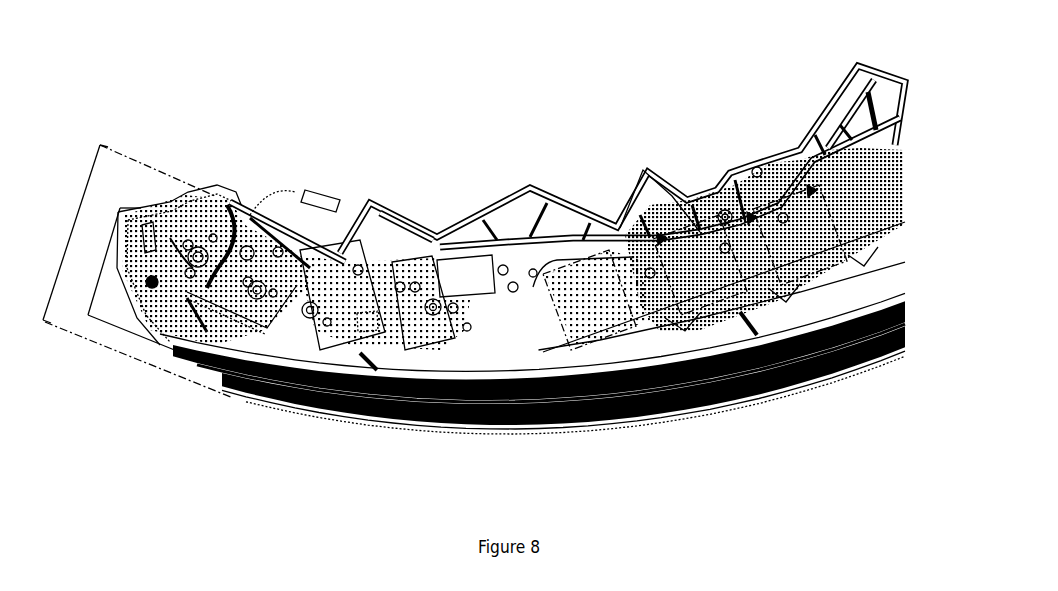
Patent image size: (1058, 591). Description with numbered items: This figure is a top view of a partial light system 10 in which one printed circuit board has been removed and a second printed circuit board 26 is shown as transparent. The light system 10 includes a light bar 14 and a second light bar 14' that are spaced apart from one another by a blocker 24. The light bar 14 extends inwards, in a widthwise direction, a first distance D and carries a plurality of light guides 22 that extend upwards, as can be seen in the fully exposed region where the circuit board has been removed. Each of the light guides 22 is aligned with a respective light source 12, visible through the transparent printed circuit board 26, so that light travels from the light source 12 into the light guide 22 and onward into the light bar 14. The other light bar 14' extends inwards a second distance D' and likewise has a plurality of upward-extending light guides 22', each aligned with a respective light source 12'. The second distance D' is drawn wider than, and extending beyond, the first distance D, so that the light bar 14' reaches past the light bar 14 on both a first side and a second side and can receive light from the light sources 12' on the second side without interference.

The light system 10 is at (417, 78).
The light source 12 is at (747, 329).
The light source 12' is at (659, 170).
The light bar 14 is at (532, 408).
The light bar 14' is at (563, 437).
The light guide 22 is at (327, 312).
The light guide 22' is at (531, 159).
The blocker 24 is at (487, 420).
The printed circuit board 26 is at (600, 320).
The first distance D is at (119, 279).
The second distance D' is at (136, 271).